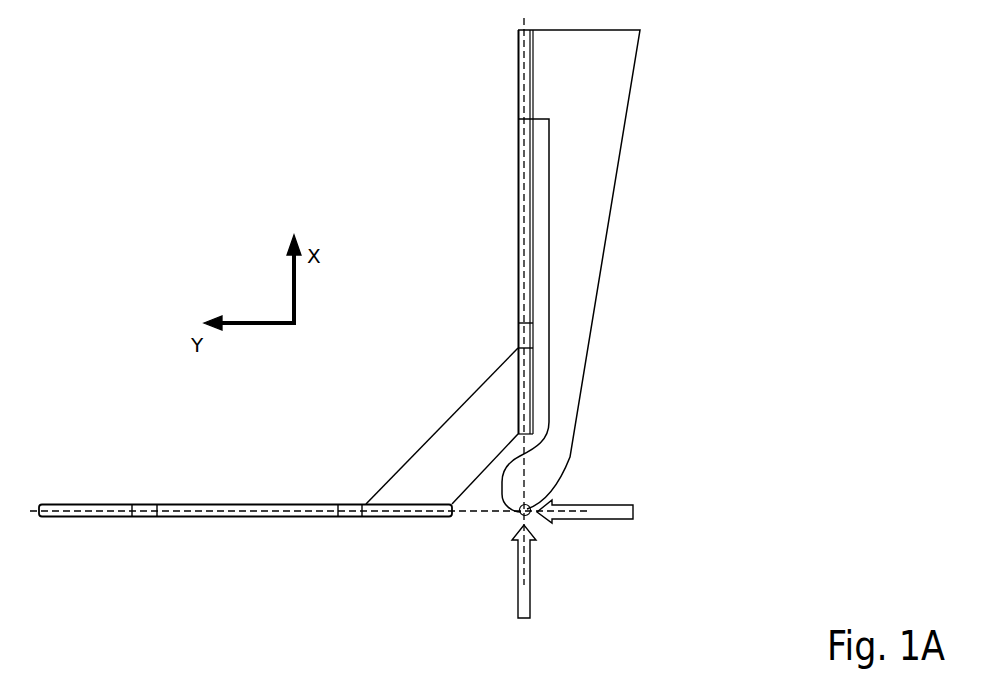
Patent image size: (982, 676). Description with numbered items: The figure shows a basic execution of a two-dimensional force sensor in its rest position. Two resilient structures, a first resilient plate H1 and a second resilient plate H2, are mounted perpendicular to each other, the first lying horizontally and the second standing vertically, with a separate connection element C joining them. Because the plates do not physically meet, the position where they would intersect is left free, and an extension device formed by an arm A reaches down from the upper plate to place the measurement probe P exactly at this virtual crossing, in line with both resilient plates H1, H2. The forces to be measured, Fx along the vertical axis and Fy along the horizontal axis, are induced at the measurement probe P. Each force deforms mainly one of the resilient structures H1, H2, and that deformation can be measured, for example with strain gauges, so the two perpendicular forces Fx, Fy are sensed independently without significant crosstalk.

The resilient structure H1 is at (253, 511).
The resilient structure H2 is at (525, 235).
The arm A is at (571, 241).
The connection element C is at (462, 440).
The measurement probe P is at (527, 517).
The force in X direction Fx is at (510, 572).
The force in Y direction Fy is at (585, 498).